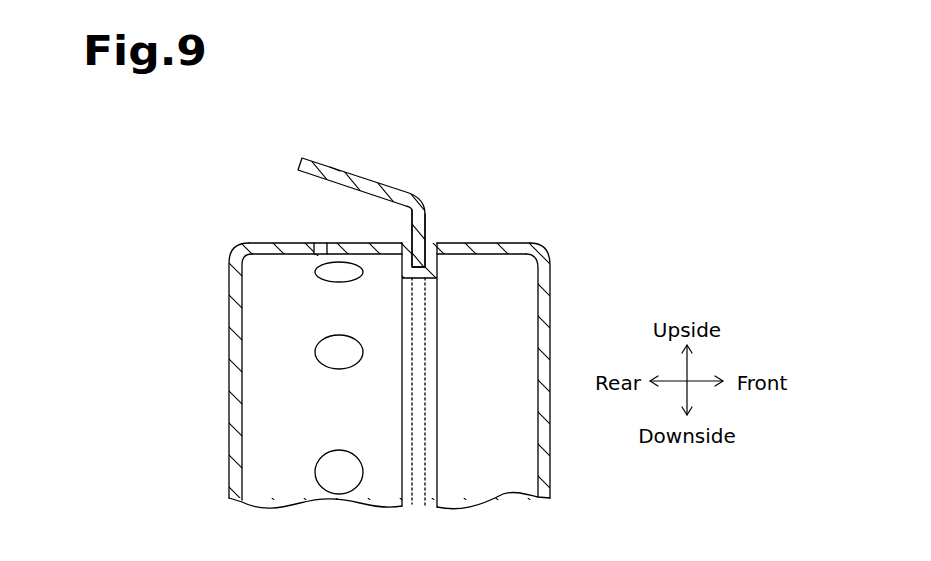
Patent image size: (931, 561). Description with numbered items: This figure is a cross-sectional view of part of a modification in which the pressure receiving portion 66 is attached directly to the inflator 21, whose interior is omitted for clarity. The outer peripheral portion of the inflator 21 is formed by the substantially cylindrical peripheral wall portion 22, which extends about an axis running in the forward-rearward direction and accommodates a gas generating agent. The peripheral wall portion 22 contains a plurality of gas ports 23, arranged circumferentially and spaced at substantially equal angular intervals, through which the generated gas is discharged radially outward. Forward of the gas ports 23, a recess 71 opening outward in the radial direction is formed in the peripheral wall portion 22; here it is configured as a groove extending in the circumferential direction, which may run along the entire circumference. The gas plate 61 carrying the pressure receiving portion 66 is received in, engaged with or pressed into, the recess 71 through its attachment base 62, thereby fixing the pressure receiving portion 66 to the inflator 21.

The inflator 21 is at (229, 366).
The peripheral wall portion 22 is at (488, 239).
The gas ports 23 is at (320, 243).
The gas plate 61 is at (368, 183).
The attachment base 62 is at (406, 221).
The pressure receiving portion 66 is at (338, 184).
The recess 71 is at (420, 258).